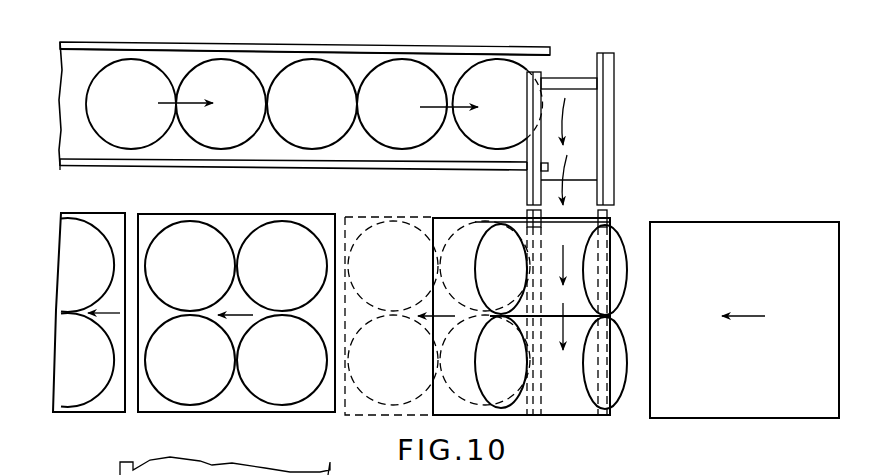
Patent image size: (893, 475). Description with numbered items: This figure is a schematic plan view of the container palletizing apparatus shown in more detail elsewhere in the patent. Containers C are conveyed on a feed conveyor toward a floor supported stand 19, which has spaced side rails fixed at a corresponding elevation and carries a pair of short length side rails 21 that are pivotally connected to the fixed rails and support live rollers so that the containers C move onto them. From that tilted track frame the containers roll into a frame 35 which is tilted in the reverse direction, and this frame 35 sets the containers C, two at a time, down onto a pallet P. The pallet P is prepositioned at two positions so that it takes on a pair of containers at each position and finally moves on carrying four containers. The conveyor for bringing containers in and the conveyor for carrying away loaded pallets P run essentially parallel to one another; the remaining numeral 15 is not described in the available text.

The conveyor 15 is at (128, 42).
The short length side rails 21 is at (462, 57).
The containers C is at (240, 78).
The floor supported stand 19 is at (620, 110).
The frame 35 is at (618, 215).
The pallet P is at (118, 213).